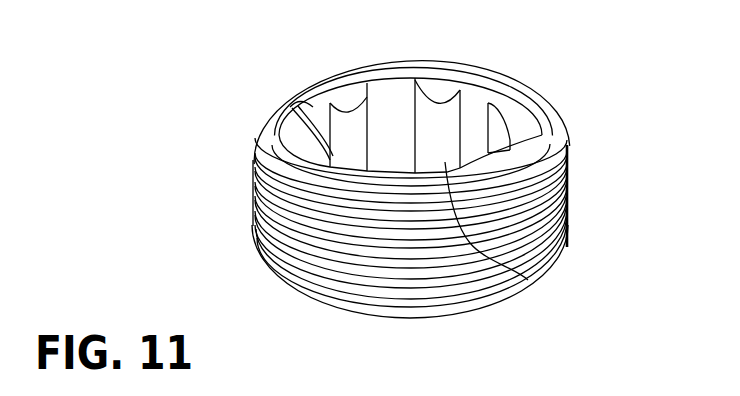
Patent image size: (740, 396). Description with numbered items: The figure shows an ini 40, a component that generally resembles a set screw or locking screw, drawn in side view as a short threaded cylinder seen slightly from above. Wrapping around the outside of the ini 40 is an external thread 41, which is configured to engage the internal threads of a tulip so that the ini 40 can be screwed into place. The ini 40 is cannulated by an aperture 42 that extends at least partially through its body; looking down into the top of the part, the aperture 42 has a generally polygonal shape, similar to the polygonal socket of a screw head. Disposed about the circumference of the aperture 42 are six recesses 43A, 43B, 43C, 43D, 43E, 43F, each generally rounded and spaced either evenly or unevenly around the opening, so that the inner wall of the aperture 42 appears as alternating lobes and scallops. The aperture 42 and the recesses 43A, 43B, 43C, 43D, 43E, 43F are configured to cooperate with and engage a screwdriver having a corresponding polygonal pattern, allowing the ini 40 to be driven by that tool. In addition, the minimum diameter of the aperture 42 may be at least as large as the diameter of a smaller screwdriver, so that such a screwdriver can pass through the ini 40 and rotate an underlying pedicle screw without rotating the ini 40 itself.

The ini 40 is at (416, 180).
The external thread 41 is at (580, 255).
The aperture 42 is at (416, 180).
The recess 43A is at (313, 111).
The recess 43B is at (366, 69).
The recess 43C is at (487, 106).
The recess 43D is at (515, 136).
The recess 43E is at (528, 280).
The recess 43F is at (440, 166).